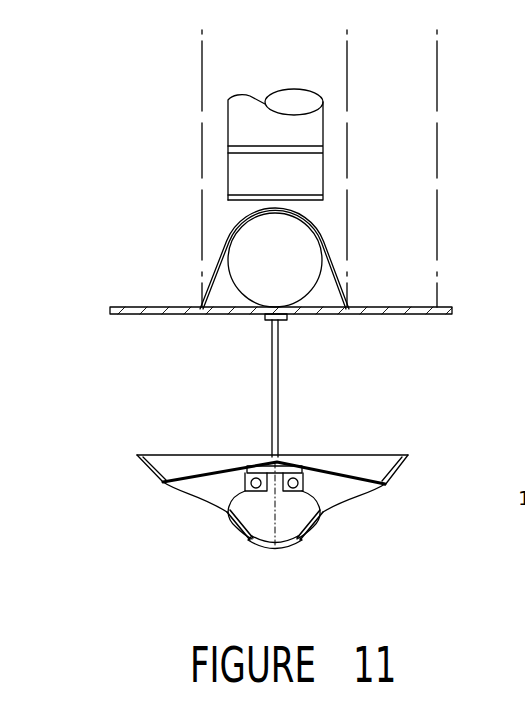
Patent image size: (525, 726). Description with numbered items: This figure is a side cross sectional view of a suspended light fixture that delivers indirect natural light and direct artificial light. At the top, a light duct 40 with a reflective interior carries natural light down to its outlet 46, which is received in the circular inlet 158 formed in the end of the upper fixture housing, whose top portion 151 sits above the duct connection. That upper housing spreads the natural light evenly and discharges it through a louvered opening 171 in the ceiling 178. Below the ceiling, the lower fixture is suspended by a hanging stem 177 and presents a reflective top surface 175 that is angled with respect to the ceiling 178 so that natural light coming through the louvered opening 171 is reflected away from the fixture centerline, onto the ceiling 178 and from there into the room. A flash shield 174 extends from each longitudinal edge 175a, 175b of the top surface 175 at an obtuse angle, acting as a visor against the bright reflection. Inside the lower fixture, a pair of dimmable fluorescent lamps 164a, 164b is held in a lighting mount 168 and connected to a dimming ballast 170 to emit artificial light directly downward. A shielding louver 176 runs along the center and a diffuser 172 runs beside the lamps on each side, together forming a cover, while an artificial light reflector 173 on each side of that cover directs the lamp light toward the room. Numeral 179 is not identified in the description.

The light duct 40 is at (278, 138).
The outlet 46 is at (327, 240).
The top portion 151 is at (318, 215).
The inlet 158 is at (293, 276).
The dimmable fluorescent lamp 164a is at (323, 523).
The dimmable fluorescent lamp 164b is at (228, 526).
The lighting mount 168 is at (285, 460).
The dimming ballast 170 is at (272, 455).
The louvered opening 171 is at (300, 313).
The diffuser 172 is at (315, 540).
The artificial light reflector 173 is at (368, 492).
The flash shield 174 is at (408, 462).
The reflective top surface 175 is at (367, 478).
The longitudinal edge 175a is at (158, 484).
The longitudinal edge 175b is at (373, 478).
The shielding louver 176 is at (250, 548).
The hanging stem 177 is at (272, 342).
The ceiling 178 is at (392, 318).
The leg 179 is at (210, 302).